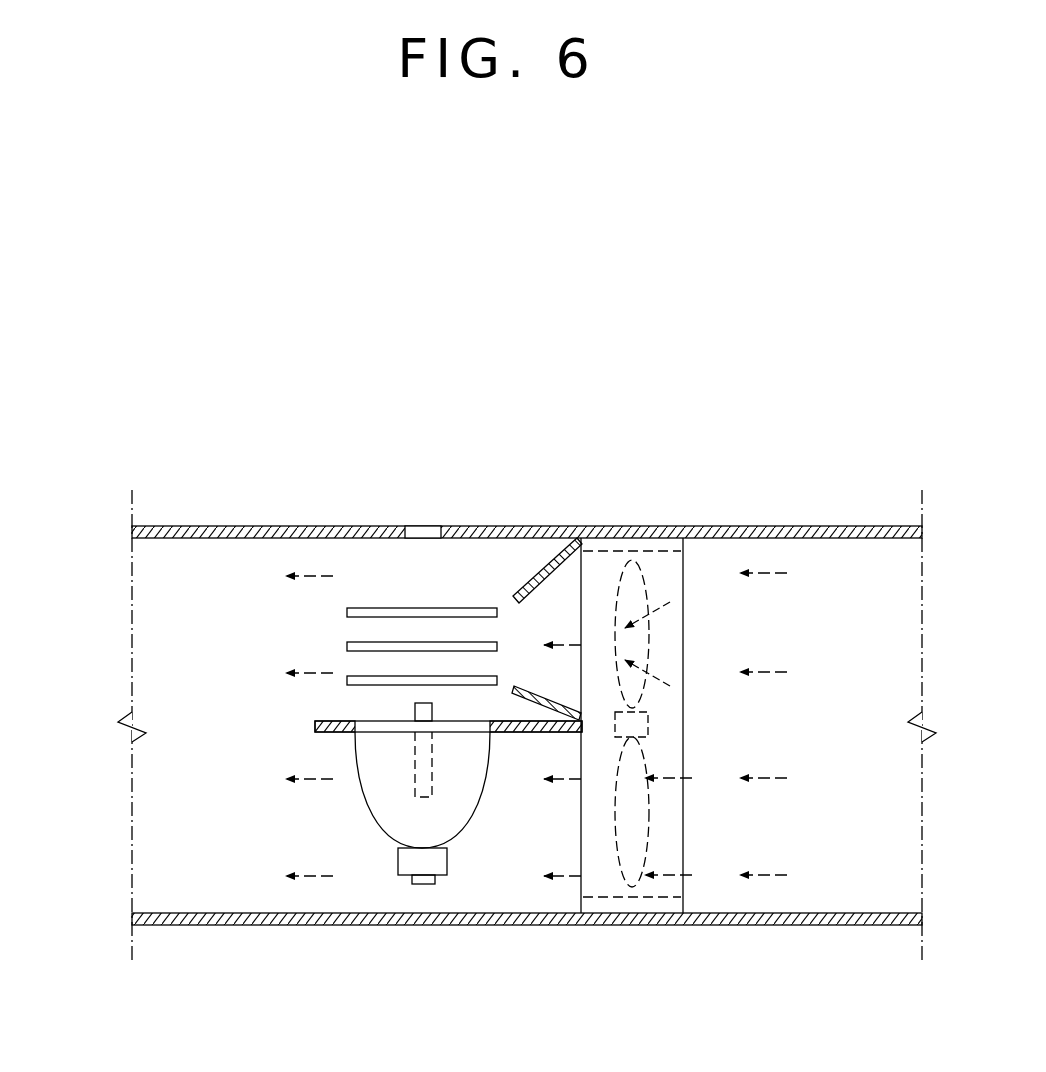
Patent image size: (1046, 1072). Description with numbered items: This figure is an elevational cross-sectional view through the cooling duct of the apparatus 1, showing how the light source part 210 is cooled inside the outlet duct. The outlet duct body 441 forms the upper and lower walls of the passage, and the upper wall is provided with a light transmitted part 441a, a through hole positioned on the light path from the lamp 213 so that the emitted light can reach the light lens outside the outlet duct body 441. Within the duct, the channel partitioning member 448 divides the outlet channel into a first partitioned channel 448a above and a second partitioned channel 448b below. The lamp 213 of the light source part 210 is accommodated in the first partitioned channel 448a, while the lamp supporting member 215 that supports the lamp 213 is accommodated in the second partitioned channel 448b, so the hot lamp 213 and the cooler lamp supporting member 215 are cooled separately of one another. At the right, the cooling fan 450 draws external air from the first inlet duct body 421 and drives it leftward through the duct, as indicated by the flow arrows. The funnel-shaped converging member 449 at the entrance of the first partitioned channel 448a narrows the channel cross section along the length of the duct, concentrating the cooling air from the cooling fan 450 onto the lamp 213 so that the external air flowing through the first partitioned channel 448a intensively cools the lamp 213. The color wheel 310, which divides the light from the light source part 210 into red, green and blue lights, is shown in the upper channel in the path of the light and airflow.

The refrigerator 1 is at (805, 412).
The outlet duct body 441 is at (200, 928).
The light transmitted part 441a is at (419, 527).
The first inlet duct body 421 is at (850, 928).
The cooling fan 450 is at (586, 893).
The converging member 449 is at (538, 575).
The color wheel 310 is at (338, 602).
The first partitioned channel 448a is at (398, 598).
The channel partitioning member 448 is at (344, 733).
The second partitioned channel 448b is at (537, 850).
The lamp 213 is at (415, 713).
The lamp supporting member 215 is at (473, 828).
The light source part 210 is at (396, 891).